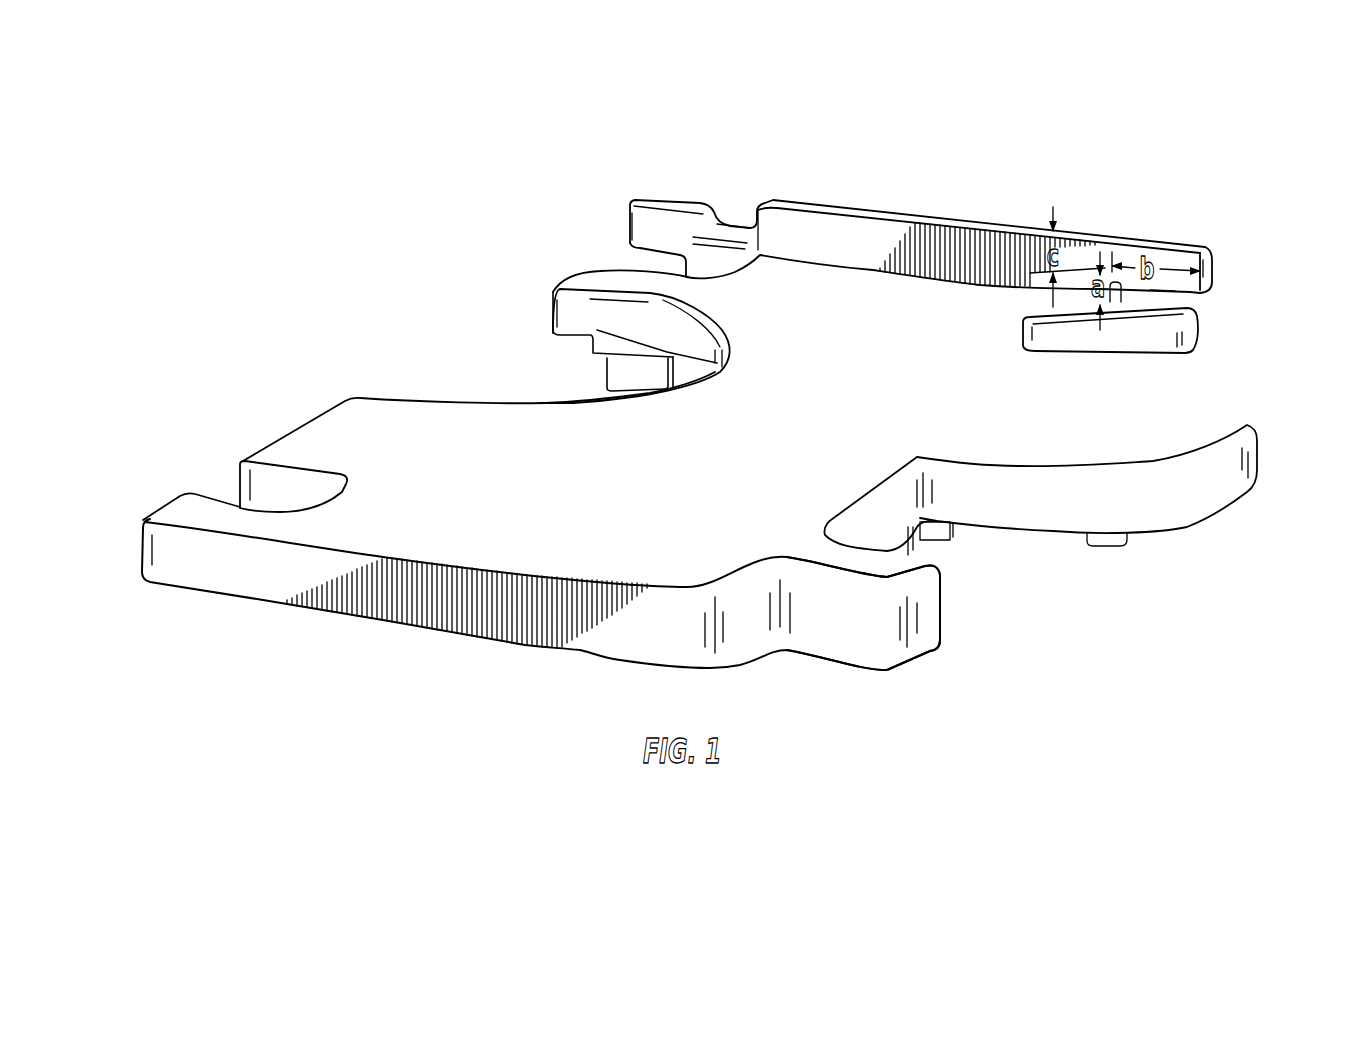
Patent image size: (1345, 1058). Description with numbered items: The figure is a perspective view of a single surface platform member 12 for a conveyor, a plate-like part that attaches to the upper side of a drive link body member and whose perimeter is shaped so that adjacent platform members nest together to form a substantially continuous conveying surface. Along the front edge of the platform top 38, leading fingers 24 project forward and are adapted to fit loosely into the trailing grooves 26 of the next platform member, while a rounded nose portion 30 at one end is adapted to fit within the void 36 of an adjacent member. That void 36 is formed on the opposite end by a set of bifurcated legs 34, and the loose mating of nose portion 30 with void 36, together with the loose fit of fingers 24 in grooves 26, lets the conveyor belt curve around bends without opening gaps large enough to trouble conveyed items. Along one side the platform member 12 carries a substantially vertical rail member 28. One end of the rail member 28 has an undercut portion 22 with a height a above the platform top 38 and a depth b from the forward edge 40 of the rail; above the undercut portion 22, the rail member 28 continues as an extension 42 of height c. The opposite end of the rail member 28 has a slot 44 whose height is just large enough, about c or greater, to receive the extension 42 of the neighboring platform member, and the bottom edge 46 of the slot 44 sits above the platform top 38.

The surface platform member 12 is at (700, 384).
The undercut portion 22 is at (1162, 235).
The leading fingers 24 is at (1037, 488).
The trailing grooves 26 is at (456, 365).
The rail member 28 is at (917, 226).
The nose portion 30 is at (1111, 450).
The bifurcated legs 34 is at (589, 394).
The void 36 is at (537, 371).
The platform top 38 is at (904, 379).
The forward edge 40 is at (1240, 265).
The extension 42 is at (1184, 242).
The slot 44 is at (778, 178).
The bottom edge 46 is at (707, 191).